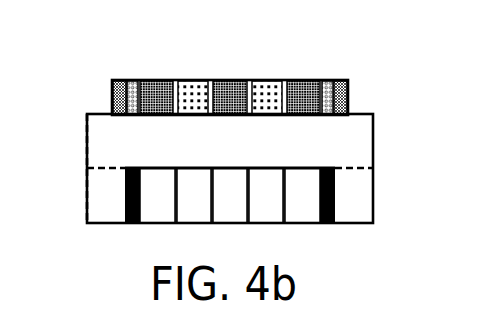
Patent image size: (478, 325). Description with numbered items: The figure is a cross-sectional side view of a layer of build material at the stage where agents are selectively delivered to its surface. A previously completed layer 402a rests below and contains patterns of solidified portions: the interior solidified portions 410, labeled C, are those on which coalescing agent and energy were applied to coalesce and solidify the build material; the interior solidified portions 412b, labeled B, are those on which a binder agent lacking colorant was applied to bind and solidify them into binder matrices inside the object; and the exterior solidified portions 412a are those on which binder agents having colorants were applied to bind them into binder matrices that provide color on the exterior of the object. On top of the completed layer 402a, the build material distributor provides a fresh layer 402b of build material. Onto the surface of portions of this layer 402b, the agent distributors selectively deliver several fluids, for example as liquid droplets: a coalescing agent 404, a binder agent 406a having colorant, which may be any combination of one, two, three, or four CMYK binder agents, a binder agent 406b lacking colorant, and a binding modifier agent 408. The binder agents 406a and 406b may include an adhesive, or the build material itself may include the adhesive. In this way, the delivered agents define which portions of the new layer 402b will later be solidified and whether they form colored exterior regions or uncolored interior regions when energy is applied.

The completed layer 402a is at (87, 208).
The layer of build material 402b is at (87, 155).
The coalescing agent 404 is at (197, 80).
The binder agent having colorant 406a is at (130, 80).
The binder agent lacking colorant 406b is at (162, 80).
The binding modifier agent 408 is at (112, 100).
The interior solidified portions 410 is at (173, 168).
The exterior solidified portions 412a is at (124, 200).
The interior solidified portions 412b is at (152, 168).